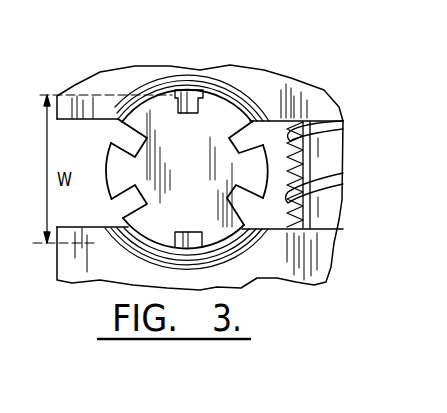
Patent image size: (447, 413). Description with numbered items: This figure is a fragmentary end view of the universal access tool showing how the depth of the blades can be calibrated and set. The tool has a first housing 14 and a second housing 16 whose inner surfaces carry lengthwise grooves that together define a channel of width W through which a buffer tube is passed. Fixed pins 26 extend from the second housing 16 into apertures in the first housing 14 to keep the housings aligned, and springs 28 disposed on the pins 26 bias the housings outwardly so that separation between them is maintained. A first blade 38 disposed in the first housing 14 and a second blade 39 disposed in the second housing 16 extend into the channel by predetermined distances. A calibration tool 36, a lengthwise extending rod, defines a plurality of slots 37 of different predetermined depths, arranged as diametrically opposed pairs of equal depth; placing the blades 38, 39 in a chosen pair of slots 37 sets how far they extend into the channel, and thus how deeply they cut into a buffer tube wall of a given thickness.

The first housing 14 is at (294, 83).
The second housing 16 is at (333, 247).
The pins 26 is at (331, 204).
The springs 28 is at (334, 180).
The calibration tool 36 is at (214, 176).
The slots 37 is at (122, 137).
The first blade 38 is at (188, 104).
The second blade 39 is at (217, 232).